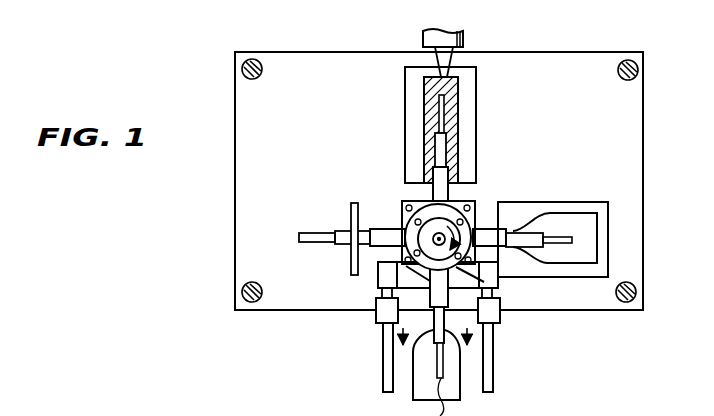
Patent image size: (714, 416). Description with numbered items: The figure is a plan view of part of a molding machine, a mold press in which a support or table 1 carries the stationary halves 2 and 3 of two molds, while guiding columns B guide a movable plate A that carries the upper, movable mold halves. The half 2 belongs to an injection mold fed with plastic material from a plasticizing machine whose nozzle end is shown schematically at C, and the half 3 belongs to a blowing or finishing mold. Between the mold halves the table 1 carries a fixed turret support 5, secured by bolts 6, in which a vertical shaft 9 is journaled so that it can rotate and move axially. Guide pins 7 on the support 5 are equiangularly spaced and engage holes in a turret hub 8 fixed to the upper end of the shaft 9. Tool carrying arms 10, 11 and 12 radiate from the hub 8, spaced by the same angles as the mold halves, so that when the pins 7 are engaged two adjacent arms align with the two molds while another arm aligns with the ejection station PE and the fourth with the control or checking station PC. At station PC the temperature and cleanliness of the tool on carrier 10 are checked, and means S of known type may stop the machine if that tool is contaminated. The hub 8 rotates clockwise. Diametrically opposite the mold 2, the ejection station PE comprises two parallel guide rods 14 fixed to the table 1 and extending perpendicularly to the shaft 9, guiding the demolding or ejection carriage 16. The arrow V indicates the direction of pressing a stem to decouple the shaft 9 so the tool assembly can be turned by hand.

The support 1 is at (643, 150).
The stationary half of injection mold 2 is at (424, 100).
The stationary half of blowing mold 3 is at (578, 270).
The fixed turret support 5 is at (473, 206).
The bolts 6 is at (410, 204).
The guide pins 7 is at (476, 220).
The turret hub 8 is at (407, 209).
The vertical shaft 9 is at (438, 244).
The tool carrying arm 10 is at (344, 232).
The tool carrying arm 11 is at (458, 104).
The tool carrying arm 12 is at (559, 238).
The guide rods 14 is at (383, 342).
The ejection carriage 16 is at (504, 321).
The guiding columns B is at (237, 75).
The nozzle end C is at (465, 40).
The stopping means S is at (435, 203).
The control or checking station PC is at (344, 265).
The ejection station PE is at (560, 340).
The arrow V is at (352, 413).
The movable plate A is at (601, 405).